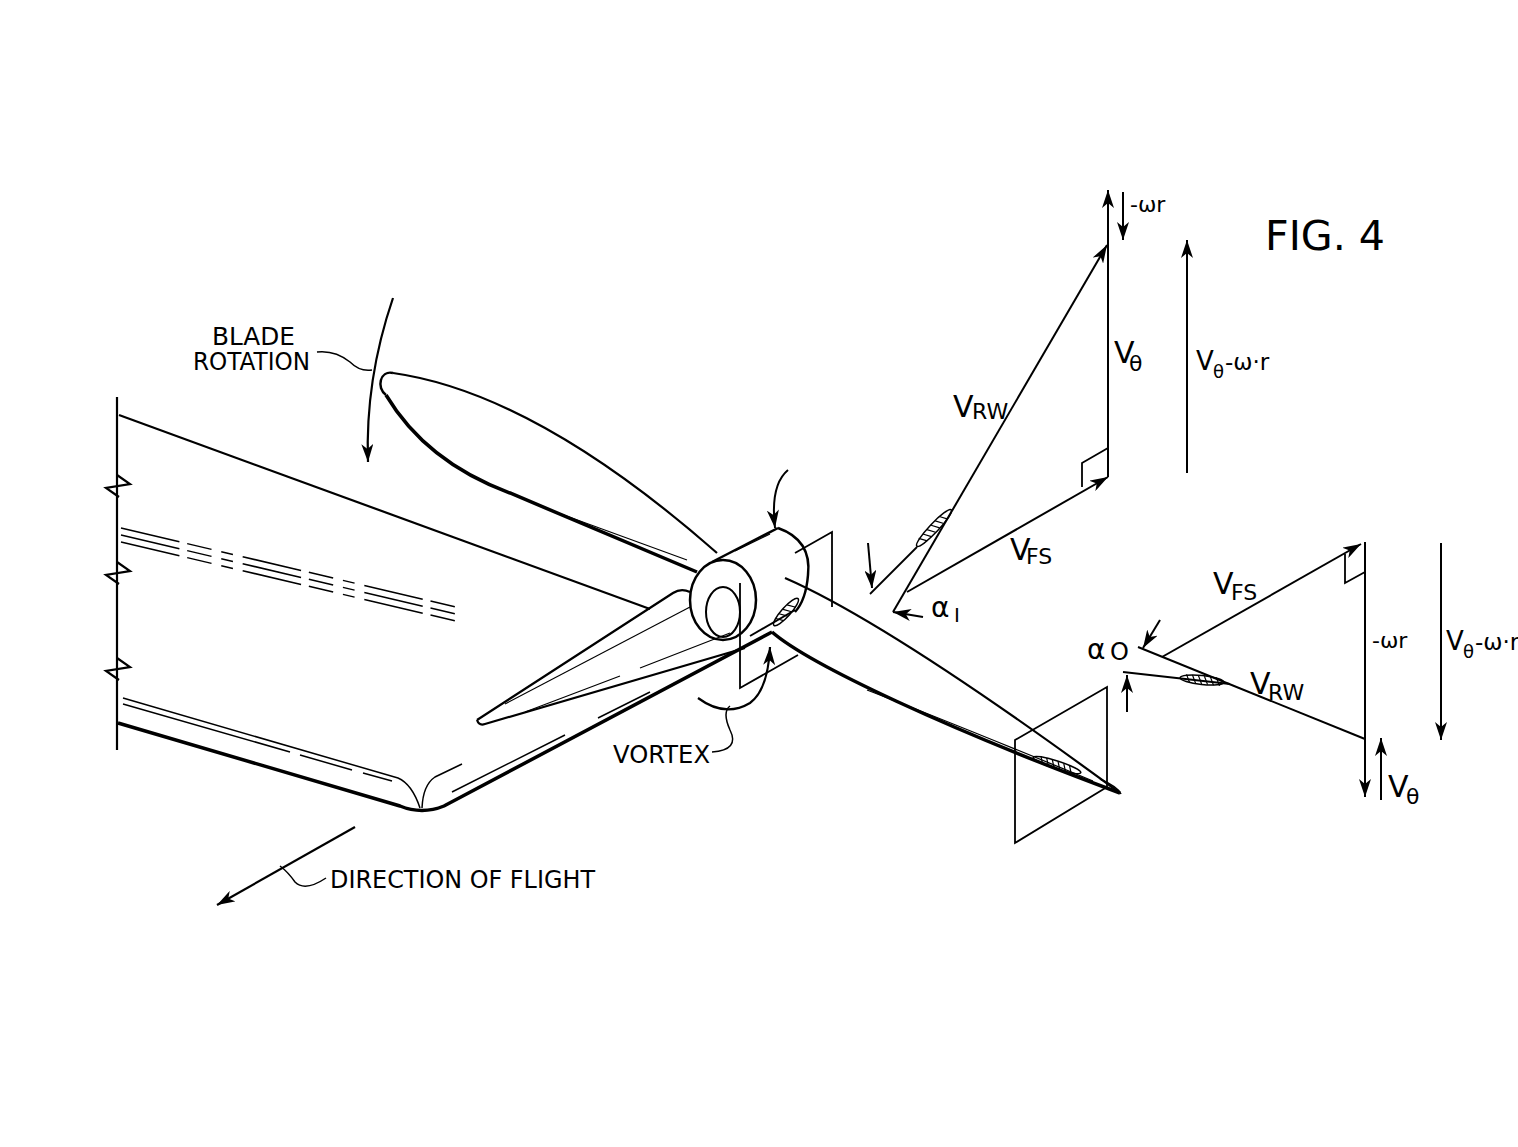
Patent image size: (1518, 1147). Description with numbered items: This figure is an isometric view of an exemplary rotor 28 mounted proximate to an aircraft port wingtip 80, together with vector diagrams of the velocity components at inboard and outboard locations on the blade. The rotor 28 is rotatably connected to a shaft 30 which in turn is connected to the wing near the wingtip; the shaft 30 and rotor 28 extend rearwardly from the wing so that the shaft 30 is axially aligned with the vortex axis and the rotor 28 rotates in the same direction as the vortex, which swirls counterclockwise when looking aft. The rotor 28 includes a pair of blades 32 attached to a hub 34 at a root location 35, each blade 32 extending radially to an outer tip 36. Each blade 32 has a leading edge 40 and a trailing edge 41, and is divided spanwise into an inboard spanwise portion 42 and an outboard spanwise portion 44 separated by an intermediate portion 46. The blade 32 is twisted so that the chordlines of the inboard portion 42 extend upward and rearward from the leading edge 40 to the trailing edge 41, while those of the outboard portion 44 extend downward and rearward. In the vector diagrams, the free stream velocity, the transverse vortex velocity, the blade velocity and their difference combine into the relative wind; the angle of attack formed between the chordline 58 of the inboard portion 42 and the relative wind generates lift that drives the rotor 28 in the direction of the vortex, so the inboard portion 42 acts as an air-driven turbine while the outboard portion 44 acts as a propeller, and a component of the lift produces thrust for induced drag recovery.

The rotor 28 is at (801, 490).
The shaft 30 is at (687, 578).
The blade 32 is at (528, 427).
The hub 34 is at (738, 541).
The root location 35 is at (797, 550).
The outer tip 36 is at (1120, 795).
The leading edge 40 is at (971, 715).
The trailing edge 41 is at (948, 665).
The inboard spanwise portion 42 is at (843, 668).
The outboard spanwise portion 44 is at (1025, 752).
The intermediate portion 46 is at (908, 705).
The chordline 58 is at (900, 562).
The port wingtip 80 is at (543, 748).